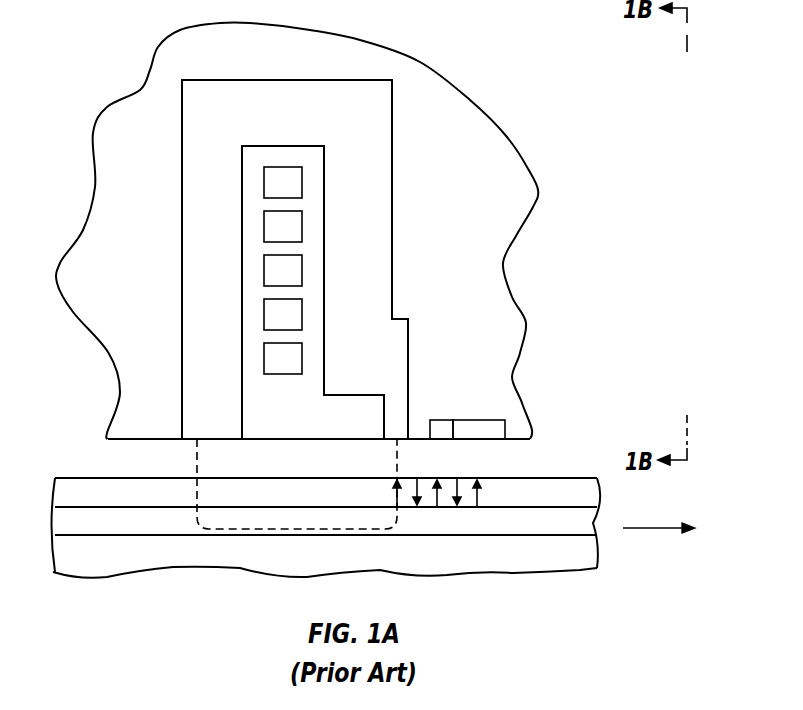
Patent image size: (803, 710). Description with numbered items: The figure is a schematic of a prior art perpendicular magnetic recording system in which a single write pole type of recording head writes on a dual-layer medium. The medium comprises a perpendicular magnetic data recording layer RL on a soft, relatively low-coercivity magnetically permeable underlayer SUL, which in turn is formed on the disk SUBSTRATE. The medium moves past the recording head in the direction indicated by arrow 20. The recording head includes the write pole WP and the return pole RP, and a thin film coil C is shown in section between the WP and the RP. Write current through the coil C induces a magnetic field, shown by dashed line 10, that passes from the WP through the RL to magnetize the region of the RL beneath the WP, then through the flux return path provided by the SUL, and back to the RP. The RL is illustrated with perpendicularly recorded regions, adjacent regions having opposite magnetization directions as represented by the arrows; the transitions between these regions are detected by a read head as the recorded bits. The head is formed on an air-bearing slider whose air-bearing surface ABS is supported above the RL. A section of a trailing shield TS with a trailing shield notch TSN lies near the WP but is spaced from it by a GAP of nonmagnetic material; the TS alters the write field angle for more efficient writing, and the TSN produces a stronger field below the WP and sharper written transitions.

The thin film coil C is at (282, 177).
The return pole RP is at (227, 258).
The write pole WP is at (383, 223).
The gap of nonmagnetic material GAP is at (417, 428).
The trailing shield notch TSN is at (433, 420).
The trailing shield TS is at (478, 441).
The air-bearing surface ABS is at (128, 441).
The magnetic field 10 is at (203, 530).
The perpendicular magnetic data recording layer RL is at (326, 525).
The soft underlayer SUL is at (326, 524).
The disk substrate SUBSTRATE is at (325, 560).
The arrow indicating direction of medium motion 20 is at (668, 530).